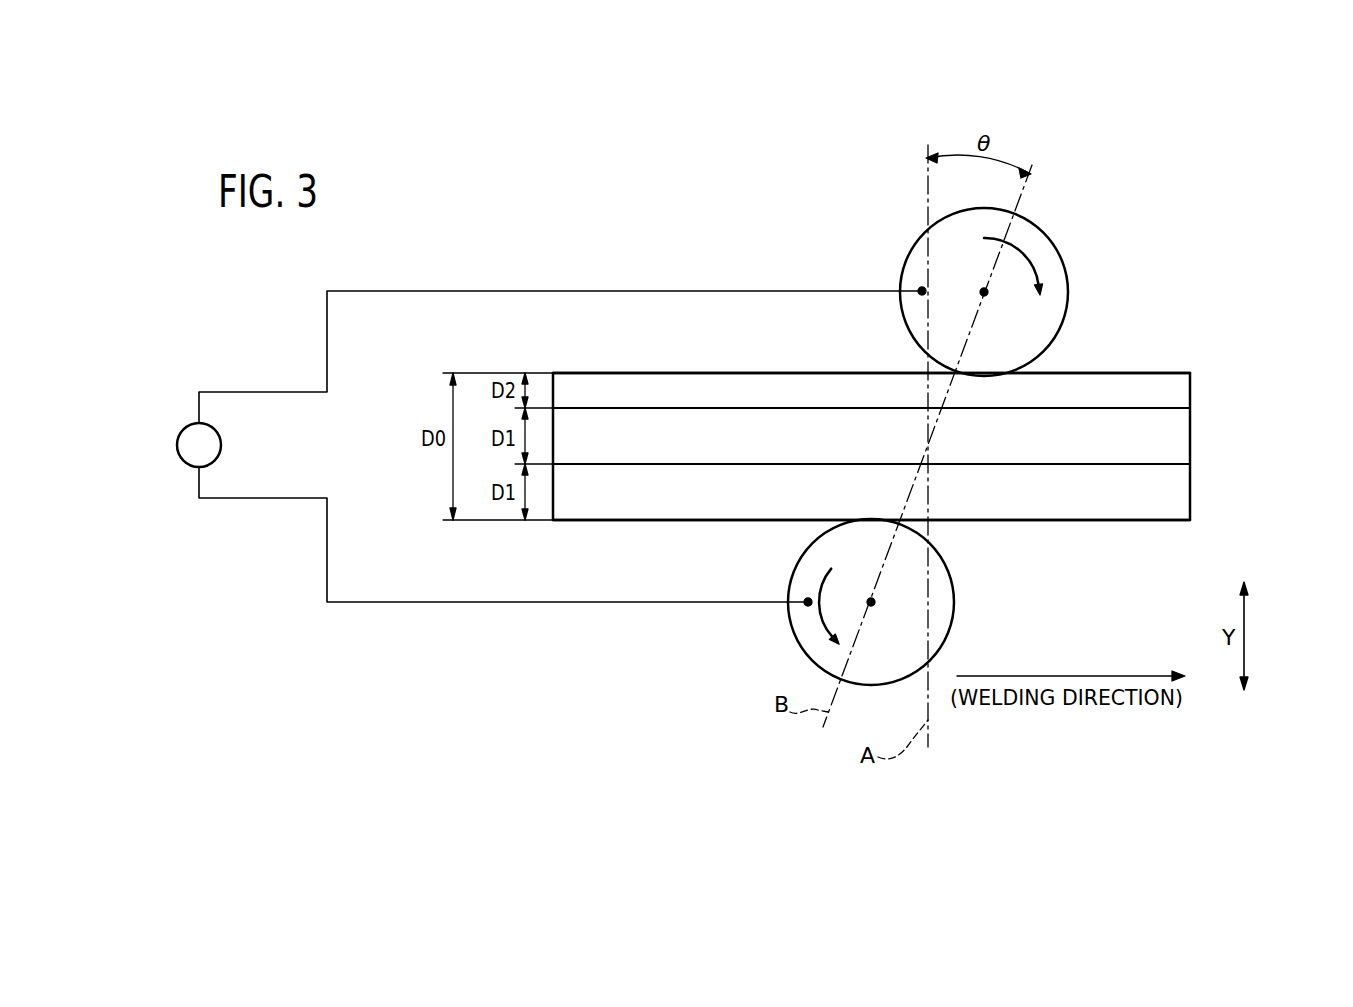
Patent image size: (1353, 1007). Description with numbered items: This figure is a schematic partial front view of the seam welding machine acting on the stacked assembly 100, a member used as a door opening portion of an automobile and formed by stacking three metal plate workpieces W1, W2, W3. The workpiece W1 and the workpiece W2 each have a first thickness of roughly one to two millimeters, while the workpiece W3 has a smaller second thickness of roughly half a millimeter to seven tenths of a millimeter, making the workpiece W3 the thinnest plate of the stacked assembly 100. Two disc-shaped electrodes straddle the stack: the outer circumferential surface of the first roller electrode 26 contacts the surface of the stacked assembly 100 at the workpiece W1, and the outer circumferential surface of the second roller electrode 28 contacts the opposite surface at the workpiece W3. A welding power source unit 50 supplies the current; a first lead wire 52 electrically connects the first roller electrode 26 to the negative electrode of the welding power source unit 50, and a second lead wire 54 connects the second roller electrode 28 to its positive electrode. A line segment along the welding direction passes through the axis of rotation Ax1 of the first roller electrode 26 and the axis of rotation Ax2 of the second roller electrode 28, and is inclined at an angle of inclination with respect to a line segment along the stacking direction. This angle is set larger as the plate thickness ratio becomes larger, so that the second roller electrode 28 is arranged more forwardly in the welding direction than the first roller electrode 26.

The first roller electrode 26 is at (797, 566).
The second roller electrode 28 is at (906, 264).
The welding power source unit 50 is at (222, 446).
The first lead wire 52 is at (591, 606).
The second lead wire 54 is at (630, 290).
The stacked assembly 100 is at (1242, 365).
The workpiece W1 is at (1181, 500).
The workpiece W2 is at (1181, 446).
The workpiece W3 is at (1181, 392).
The axis of rotation of the first roller electrode Ax1 is at (874, 606).
The axis of rotation of the second roller electrode Ax2 is at (988, 296).